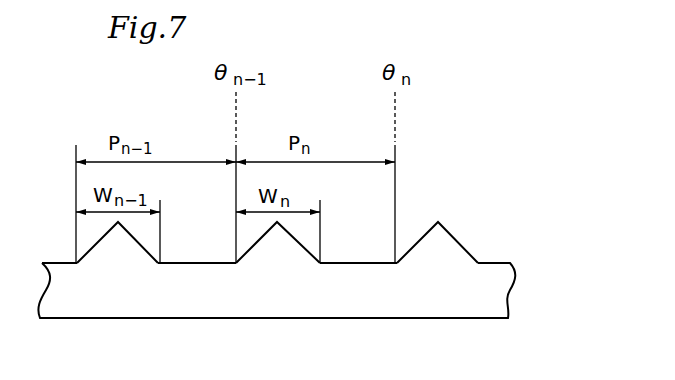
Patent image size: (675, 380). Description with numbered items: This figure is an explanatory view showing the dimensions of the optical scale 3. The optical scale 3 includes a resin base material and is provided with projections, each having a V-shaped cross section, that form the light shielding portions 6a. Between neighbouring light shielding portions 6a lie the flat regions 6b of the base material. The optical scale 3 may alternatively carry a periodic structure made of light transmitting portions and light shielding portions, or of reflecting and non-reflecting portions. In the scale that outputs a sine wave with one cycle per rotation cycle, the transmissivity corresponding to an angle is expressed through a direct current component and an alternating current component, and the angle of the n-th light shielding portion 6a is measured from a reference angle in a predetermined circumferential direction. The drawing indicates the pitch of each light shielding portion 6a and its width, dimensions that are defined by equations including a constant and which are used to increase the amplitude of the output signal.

The optical scale 3 is at (457, 305).
The light shielding portion 6a is at (118, 247).
The flat portion between protrusions 6b is at (193, 275).